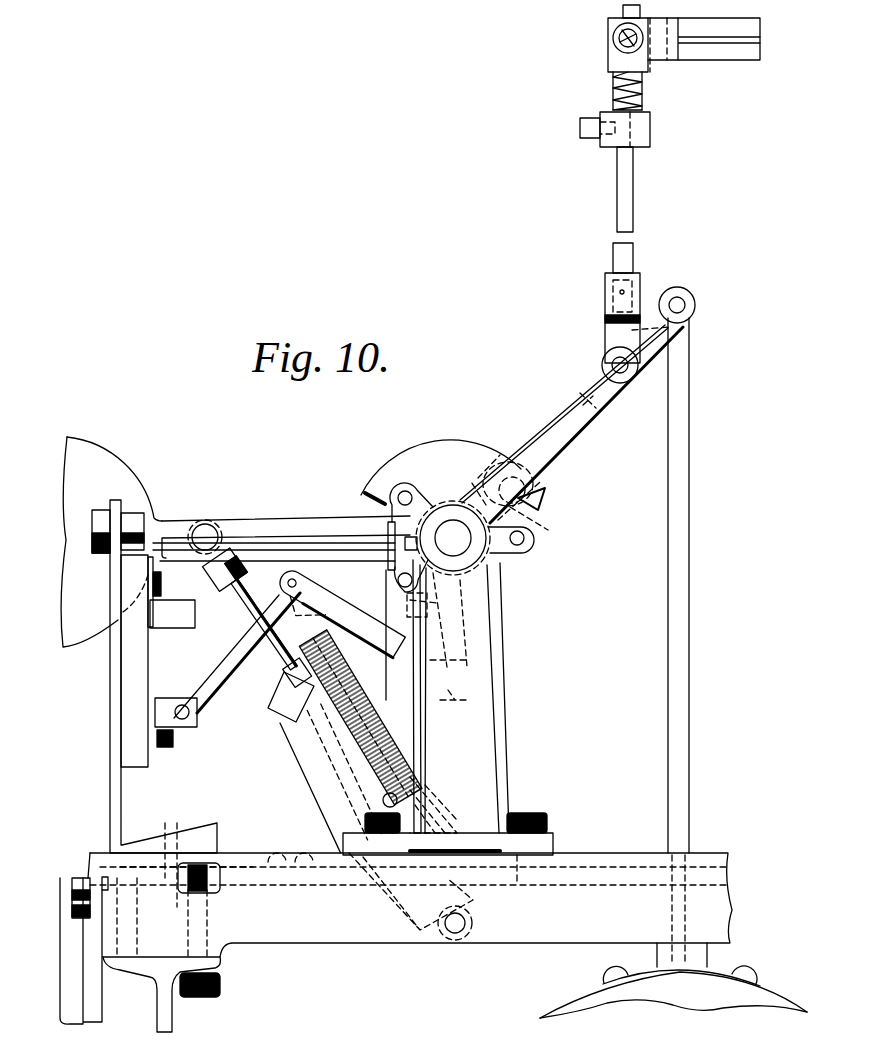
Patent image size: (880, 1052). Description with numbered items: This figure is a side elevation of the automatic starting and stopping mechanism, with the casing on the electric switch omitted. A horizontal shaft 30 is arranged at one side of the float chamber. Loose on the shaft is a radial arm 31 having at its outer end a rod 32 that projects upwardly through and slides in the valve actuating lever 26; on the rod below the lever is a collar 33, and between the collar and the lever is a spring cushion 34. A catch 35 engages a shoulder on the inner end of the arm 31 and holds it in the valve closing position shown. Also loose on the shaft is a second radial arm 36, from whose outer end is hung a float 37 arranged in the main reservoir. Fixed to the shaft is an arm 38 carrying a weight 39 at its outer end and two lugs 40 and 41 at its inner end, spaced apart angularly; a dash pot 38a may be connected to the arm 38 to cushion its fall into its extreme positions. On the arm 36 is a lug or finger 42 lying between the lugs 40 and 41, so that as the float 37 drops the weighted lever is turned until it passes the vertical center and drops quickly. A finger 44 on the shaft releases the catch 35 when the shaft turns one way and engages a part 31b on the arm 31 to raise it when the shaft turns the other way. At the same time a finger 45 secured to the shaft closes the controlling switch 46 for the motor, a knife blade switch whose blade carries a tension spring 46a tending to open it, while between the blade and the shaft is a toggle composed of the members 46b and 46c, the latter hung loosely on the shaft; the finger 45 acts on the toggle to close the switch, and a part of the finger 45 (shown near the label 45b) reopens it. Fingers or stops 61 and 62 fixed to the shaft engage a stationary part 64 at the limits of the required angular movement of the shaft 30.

The valve actuating lever 26 is at (730, 60).
The spring cushion 34 is at (613, 90).
The collar 33 is at (645, 133).
The rod 32 is at (618, 188).
The second radial arm 36 is at (657, 333).
The radial arm 31 is at (567, 430).
The lug or finger 42 is at (524, 446).
The part on inner end of arm 31b is at (477, 480).
The lug 40 is at (380, 488).
The finger or stop 62 is at (407, 490).
The lug 41 is at (529, 496).
The finger 44 is at (583, 550).
The finger 45 is at (524, 543).
The horizontal shaft 30 is at (458, 545).
The finger or stop 61 is at (393, 533).
The catch 35 is at (392, 603).
The pin 45b is at (446, 620).
The toggle member 46c is at (465, 688).
The stationary part 64 is at (490, 728).
The tension spring 46a is at (395, 748).
The dash pot 38a is at (312, 738).
The toggle member 46b is at (285, 663).
The controlling switch 46 is at (180, 622).
The arm 38 is at (262, 523).
The weight 39 is at (130, 487).
The float 37 is at (608, 997).